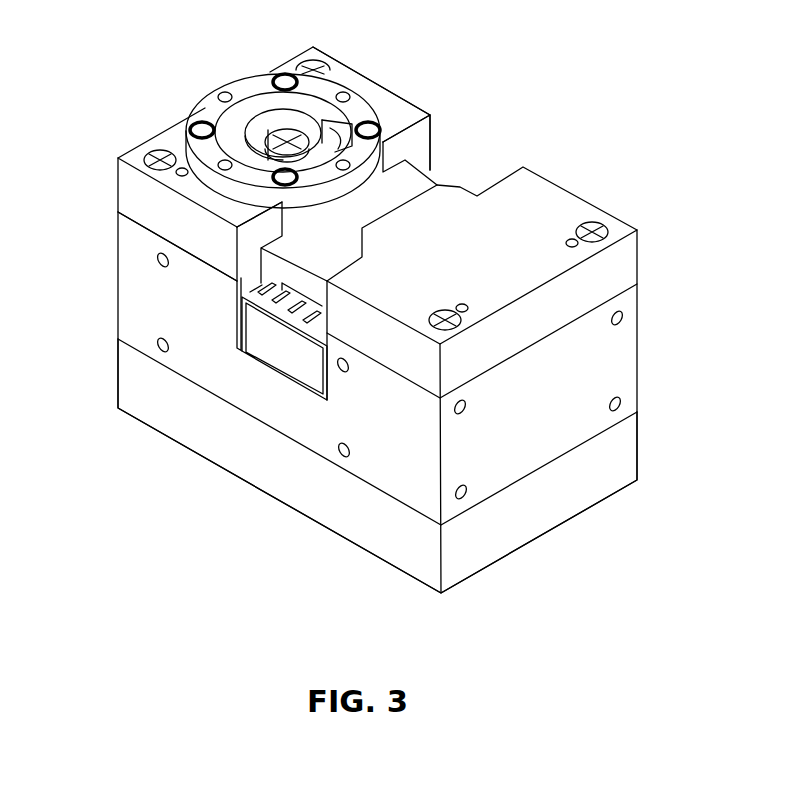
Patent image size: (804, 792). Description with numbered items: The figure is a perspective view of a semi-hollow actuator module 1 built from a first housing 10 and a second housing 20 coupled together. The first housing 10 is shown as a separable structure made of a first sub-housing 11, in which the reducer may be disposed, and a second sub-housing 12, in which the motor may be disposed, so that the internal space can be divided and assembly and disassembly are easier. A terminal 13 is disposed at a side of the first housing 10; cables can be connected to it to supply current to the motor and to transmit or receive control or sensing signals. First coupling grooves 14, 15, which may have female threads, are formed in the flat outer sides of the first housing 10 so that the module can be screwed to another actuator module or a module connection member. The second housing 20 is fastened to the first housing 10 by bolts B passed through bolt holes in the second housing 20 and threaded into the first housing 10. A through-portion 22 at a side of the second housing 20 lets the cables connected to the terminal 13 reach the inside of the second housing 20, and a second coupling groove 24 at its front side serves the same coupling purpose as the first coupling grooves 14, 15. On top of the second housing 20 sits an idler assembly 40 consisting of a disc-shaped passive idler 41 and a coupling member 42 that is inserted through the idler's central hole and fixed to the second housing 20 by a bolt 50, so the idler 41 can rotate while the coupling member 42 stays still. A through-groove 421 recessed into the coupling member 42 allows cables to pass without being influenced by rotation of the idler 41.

The semi-hollow actuator module 1 is at (588, 133).
The first housing 10 is at (74, 272).
The first sub-housing 11 is at (128, 370).
The second sub-housing 12 is at (128, 291).
The terminal 13 is at (290, 372).
The first coupling groove 14 is at (345, 458).
The first coupling groove 15 is at (463, 499).
The second housing 20 is at (128, 189).
The through-portion 22 is at (290, 294).
The second coupling groove 24 is at (578, 256).
The bolt B is at (600, 232).
The idler assembly 40 is at (380, 107).
The passive idler 41 is at (211, 108).
The coupling member 42 is at (324, 110).
The through-groove 421 is at (350, 143).
The bolt 50 is at (286, 130).